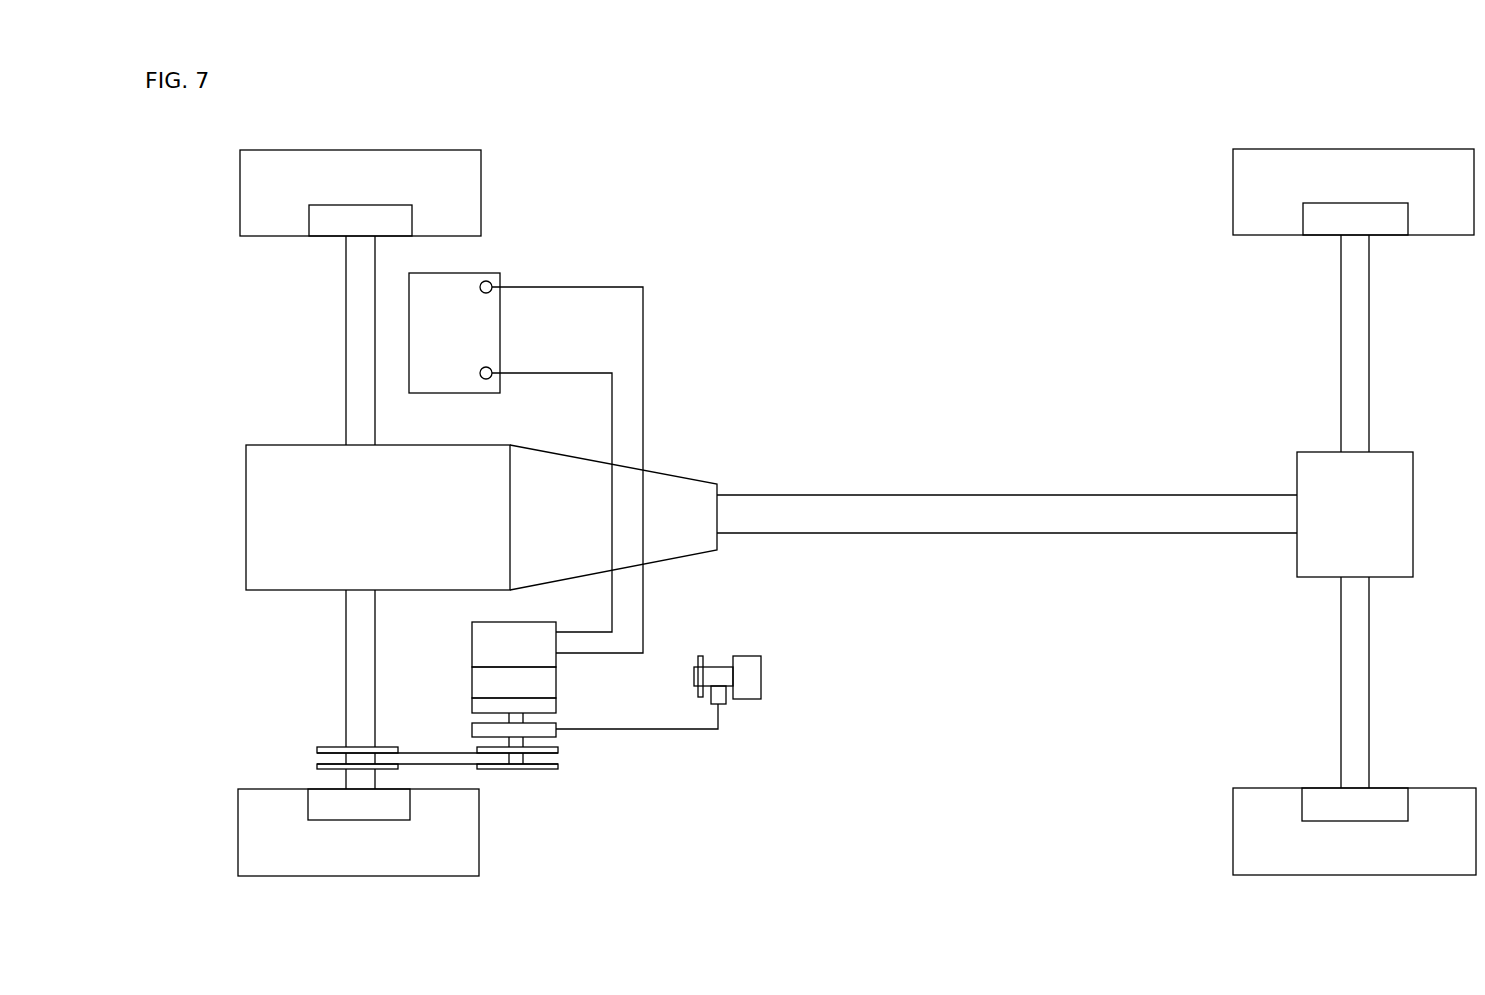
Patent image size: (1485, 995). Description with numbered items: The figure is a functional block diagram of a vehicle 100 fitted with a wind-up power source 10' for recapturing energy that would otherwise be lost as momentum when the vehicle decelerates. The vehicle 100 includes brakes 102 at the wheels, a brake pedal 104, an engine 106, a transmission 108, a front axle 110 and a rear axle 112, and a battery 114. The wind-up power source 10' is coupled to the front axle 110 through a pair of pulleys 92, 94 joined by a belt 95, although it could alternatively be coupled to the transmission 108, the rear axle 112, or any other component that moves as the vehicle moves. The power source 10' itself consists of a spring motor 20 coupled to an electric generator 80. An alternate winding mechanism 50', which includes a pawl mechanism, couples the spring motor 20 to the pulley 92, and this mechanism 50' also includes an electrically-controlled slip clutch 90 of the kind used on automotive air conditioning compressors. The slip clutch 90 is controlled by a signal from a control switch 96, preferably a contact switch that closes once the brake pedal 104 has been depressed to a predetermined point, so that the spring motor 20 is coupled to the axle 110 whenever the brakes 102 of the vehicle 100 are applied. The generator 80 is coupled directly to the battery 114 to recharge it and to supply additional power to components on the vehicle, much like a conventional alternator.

The vehicle 100 is at (640, 215).
The brakes 102 is at (317, 238).
The front axle 110 is at (345, 340).
The rear axle 112 is at (1340, 700).
The engine 106 is at (292, 590).
The transmission 108 is at (673, 470).
The battery 114 is at (526, 427).
The wind-up power source 10' is at (526, 690).
The electric generator 80 is at (516, 634).
The spring motor 20 is at (488, 687).
The winding mechanism 50' is at (574, 690).
The slip clutch 90 is at (557, 735).
The pulley 92 is at (515, 770).
The pulley 94 is at (328, 748).
The belt 95 is at (447, 752).
The brake pedal 104 is at (762, 665).
The control switch 96 is at (725, 702).